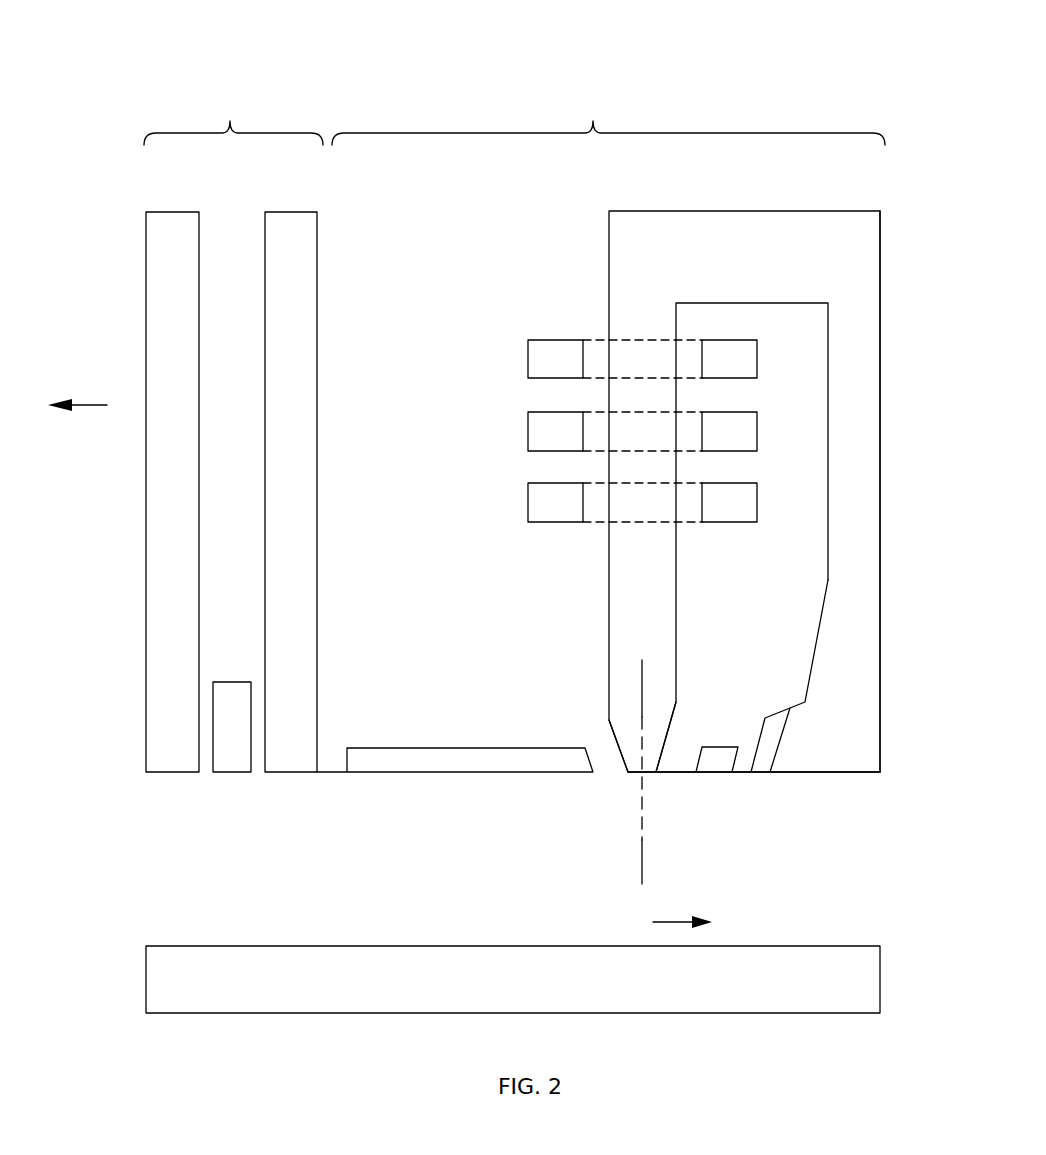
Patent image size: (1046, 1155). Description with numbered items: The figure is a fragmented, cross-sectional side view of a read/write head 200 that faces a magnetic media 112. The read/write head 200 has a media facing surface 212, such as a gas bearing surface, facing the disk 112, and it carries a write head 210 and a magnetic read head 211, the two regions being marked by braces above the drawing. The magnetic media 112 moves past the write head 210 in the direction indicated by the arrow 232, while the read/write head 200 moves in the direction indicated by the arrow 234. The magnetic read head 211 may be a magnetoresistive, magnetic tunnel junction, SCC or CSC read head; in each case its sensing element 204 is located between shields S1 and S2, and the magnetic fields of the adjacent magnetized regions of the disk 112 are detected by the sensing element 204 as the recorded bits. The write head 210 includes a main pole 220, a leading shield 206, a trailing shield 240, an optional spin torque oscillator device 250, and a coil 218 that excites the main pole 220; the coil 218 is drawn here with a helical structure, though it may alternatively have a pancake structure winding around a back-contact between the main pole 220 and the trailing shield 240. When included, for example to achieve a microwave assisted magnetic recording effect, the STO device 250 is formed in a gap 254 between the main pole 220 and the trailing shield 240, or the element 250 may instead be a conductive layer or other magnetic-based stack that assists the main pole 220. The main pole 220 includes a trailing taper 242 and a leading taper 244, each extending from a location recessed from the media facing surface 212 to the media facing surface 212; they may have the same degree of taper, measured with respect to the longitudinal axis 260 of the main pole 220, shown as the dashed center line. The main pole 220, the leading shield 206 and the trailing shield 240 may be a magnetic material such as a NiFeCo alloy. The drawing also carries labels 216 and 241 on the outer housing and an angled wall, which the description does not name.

The read/write head 200 is at (138, 38).
The magnetic read head 211 is at (233, 118).
The write head 210 is at (608, 118).
The outer housing 216 is at (858, 263).
The main pole 220 is at (677, 590).
The coil 218 is at (557, 523).
The arrow 234 is at (88, 402).
The leading taper 244 is at (620, 727).
The trailing taper 242 is at (669, 732).
The trailing shield 240 is at (880, 738).
The gap 254 is at (608, 770).
The spin torque oscillator (STO) device 250 is at (712, 762).
The angled wall 241 is at (763, 762).
The media facing surface (MFS) 212 is at (859, 773).
The longitudinal axis 260 is at (642, 840).
The arrow 232 is at (672, 921).
The magnetic media 112 is at (880, 975).
The shield S1 is at (168, 773).
The shield S2 is at (293, 773).
The sensing element 204 is at (232, 773).
The leading shield 206 is at (392, 773).